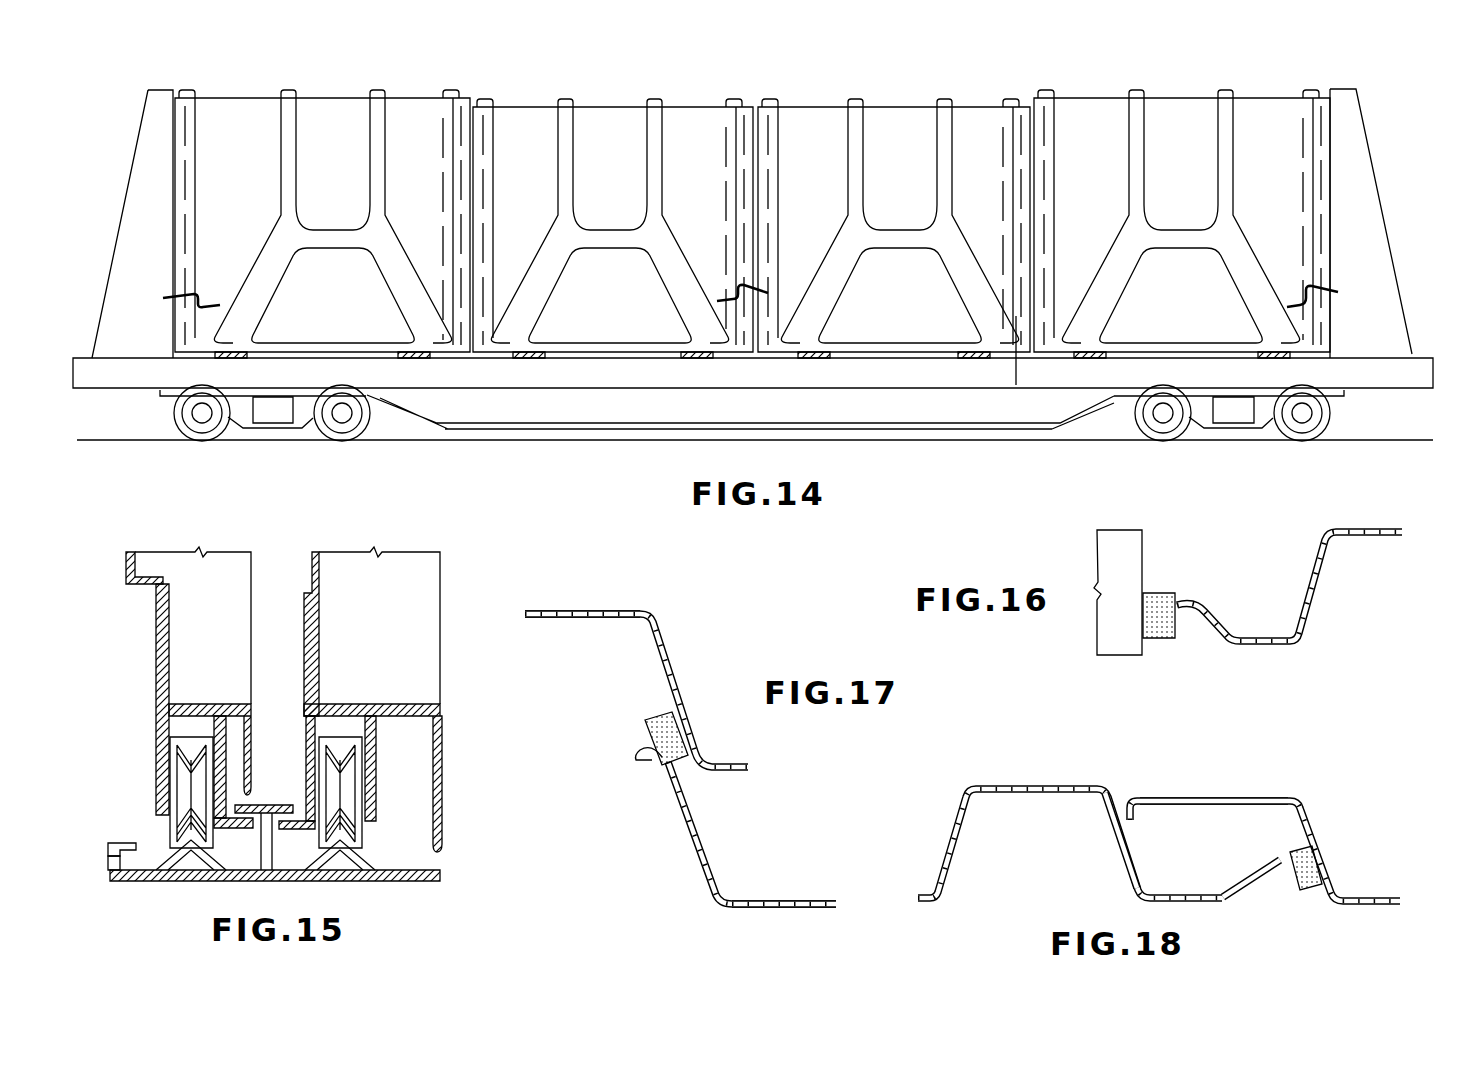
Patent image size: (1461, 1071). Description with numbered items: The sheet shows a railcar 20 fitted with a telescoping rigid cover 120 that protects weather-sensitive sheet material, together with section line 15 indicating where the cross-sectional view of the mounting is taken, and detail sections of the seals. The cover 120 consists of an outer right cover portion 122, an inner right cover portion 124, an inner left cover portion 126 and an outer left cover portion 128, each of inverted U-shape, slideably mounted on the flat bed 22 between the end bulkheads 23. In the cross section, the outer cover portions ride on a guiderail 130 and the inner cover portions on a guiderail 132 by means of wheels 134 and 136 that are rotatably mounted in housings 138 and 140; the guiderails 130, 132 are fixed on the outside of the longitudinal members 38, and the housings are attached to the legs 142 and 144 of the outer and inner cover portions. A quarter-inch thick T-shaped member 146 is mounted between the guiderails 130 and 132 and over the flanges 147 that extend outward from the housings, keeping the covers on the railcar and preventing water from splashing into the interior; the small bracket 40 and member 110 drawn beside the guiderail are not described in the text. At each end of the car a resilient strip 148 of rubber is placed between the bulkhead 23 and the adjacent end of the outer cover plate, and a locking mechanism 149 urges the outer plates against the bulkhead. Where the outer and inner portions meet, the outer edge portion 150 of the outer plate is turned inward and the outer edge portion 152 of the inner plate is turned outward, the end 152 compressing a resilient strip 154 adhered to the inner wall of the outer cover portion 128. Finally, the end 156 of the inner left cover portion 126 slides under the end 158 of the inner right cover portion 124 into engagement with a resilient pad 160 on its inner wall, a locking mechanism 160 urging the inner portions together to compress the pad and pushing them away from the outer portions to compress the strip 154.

In FIG. 14, the railcar 20 is at (1425, 318).
In FIG. 14, the flat bed 22 is at (70, 338).
In FIG. 15, the flat bed 22 is at (380, 886).
In FIG. 14, the bulkhead 23 is at (133, 190).
In FIG. 16, the bulkhead 23 is at (1107, 555).
In FIG. 14, the section line 15- 15 is at (1016, 374).
In FIG. 15, the longitudinal member 38 is at (112, 842).
In FIG. 15, the retainer 40 is at (108, 858).
In FIG. 15, the mounting member 110 is at (126, 838).
In FIG. 14, the rigid cover 120 is at (1185, 68).
In FIG. 14, the outer right cover portion 122 is at (1274, 93).
In FIG. 15, the outer right cover portion 122 is at (318, 545).
In FIG. 14, the inner right cover portion 124 is at (982, 102).
In FIG. 15, the inner right cover portion 124 is at (122, 571).
In FIG. 18, the inner right cover portion 124 is at (1257, 784).
In FIG. 14, the inner left cover portion 126 is at (528, 102).
In FIG. 17, the inner left cover portion 126 is at (722, 875).
In FIG. 18, the inner left cover portion 126 is at (1037, 780).
In FIG. 14, the outer left cover portion 128 is at (257, 80).
In FIG. 17, the outer left cover portion 128 is at (661, 604).
In FIG. 16, the outer left cover portion 128 is at (1350, 515).
In FIG. 15, the guiderail 130 is at (362, 856).
In FIG. 15, the guiderail 132 is at (176, 870).
In FIG. 15, the wheels 134 is at (362, 820).
In FIG. 15, the wheels 136 is at (175, 826).
In FIG. 15, the housing 138 is at (376, 738).
In FIG. 15, the housing 140 is at (158, 746).
In FIG. 15, the leg 142 is at (320, 636).
In FIG. 15, the leg 144 is at (170, 632).
In FIG. 15, the T-shaped member 146 is at (268, 806).
In FIG. 15, the flanges 147 is at (236, 829).
In FIG. 16, the resilient strip 148 is at (1163, 590).
In FIG. 14, the locking mechanism 149 is at (208, 290).
In FIG. 17, the outer edge portion 150 is at (672, 662).
In FIG. 17, the outer edge portion 152 is at (683, 823).
In FIG. 17, the resilient strip 154 is at (652, 712).
In FIG. 18, the end 156 is at (1122, 853).
In FIG. 18, the end 158 is at (1185, 799).
In FIG. 14, the resilient pad 160 is at (758, 288).
In FIG. 18, the resilient pad 160 is at (1293, 853).